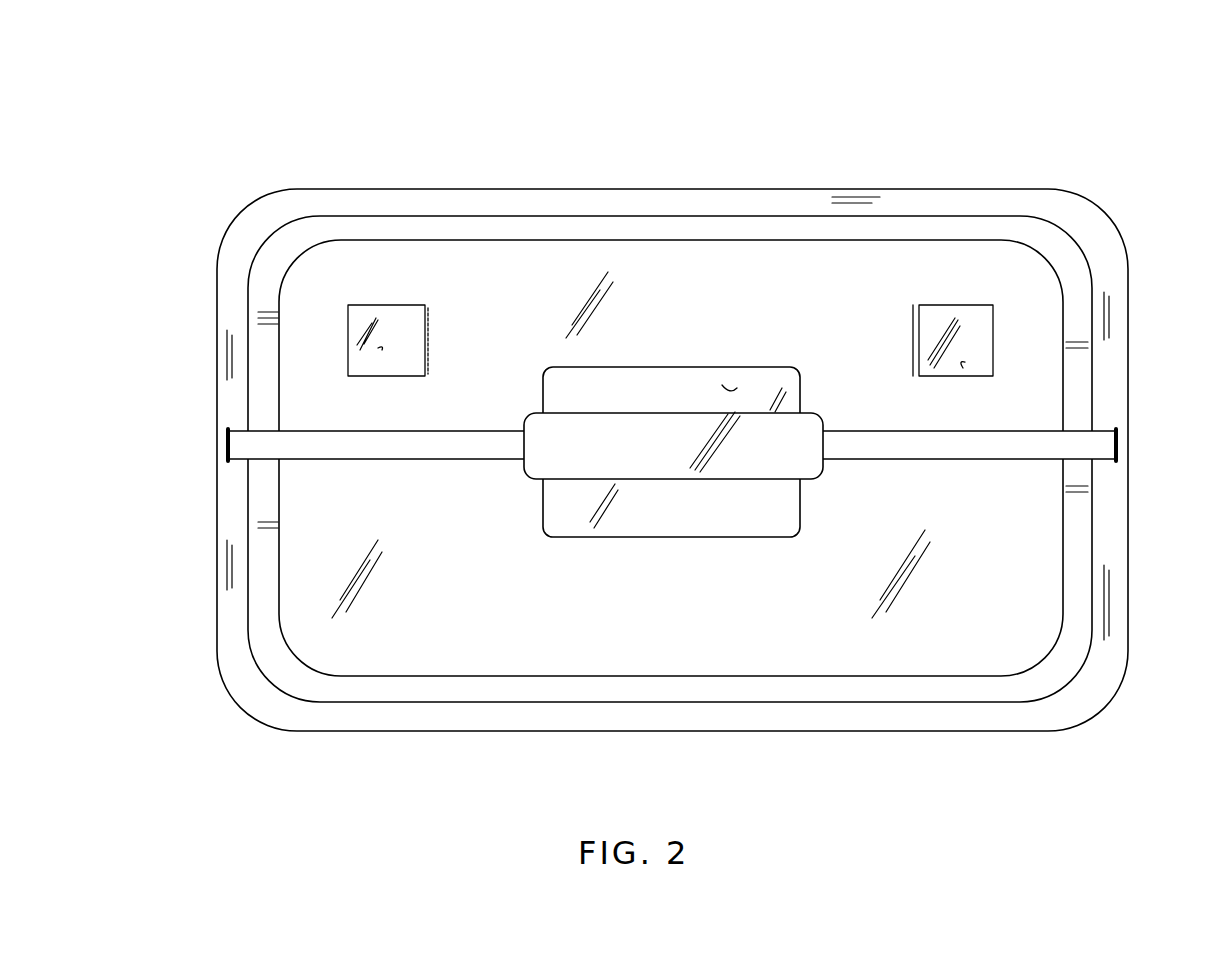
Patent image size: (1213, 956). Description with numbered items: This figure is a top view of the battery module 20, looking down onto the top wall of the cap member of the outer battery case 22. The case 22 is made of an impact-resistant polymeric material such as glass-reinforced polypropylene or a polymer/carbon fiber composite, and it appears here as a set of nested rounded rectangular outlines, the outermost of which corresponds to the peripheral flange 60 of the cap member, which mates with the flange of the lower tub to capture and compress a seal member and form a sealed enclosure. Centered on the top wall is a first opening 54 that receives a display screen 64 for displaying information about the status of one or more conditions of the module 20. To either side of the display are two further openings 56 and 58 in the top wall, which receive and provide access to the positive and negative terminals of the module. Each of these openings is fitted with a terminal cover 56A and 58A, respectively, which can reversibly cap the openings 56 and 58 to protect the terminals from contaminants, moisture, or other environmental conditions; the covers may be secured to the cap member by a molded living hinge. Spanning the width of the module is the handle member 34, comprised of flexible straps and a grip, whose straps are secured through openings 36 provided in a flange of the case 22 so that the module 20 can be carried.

The battery module 20 is at (558, 56).
The outer battery case 22 is at (262, 208).
The handle member 34 is at (460, 448).
The openings 36 is at (212, 446).
The first opening 54 is at (660, 360).
The opening 56 is at (395, 294).
The terminal cover 56A is at (380, 348).
The opening 58 is at (970, 294).
The terminal cover 58A is at (963, 368).
The peripheral flange 60 is at (1091, 224).
The display screen 64 is at (737, 388).